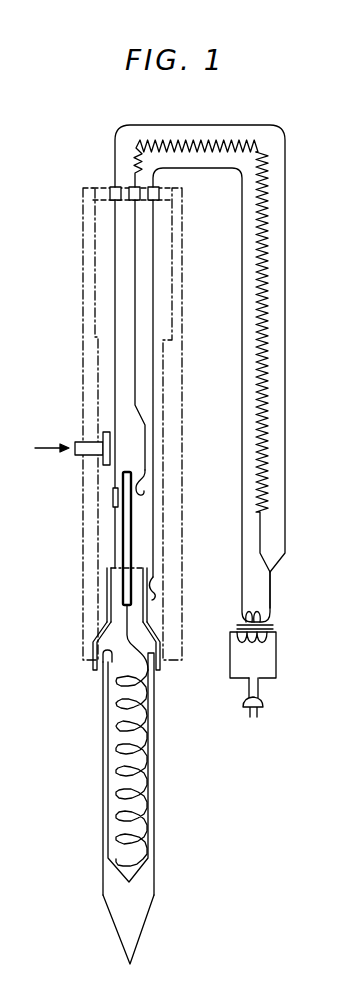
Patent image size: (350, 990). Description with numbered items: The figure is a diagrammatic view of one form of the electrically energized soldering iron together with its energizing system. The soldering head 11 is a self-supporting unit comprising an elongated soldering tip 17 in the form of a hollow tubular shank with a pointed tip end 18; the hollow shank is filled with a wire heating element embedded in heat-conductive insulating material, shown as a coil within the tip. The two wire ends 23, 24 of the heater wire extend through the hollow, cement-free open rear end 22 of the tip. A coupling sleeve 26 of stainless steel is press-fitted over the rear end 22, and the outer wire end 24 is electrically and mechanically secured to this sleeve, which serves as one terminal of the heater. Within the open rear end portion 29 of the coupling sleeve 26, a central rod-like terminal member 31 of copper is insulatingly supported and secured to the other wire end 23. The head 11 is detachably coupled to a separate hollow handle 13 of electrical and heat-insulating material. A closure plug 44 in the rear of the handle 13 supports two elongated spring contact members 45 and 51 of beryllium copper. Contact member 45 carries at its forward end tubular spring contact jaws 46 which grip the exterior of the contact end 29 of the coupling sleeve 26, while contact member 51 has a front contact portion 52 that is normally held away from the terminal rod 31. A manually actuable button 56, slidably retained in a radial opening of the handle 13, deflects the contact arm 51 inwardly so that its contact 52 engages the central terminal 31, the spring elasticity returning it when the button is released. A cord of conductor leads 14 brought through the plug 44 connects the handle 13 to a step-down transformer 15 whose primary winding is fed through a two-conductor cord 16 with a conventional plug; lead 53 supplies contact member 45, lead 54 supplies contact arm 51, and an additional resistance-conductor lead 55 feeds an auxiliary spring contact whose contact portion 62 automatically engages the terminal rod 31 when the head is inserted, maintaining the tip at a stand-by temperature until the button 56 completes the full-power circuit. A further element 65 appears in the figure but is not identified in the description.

The soldering head 11 is at (125, 807).
The handle 13 is at (77, 218).
The cord of conductor leads 14 is at (220, 411).
The step-down transformer 15 is at (278, 637).
The two-conductor cord 16 is at (264, 696).
The soldering tip 17 is at (108, 811).
The pointed tip end 18 is at (123, 912).
The open rear end of soldering tip 22 is at (104, 668).
The heater wire end 23 is at (131, 625).
The outer heater wire end 24 is at (120, 671).
The coupling sleeve 26 is at (92, 647).
The open rear end portion of coupling sleeve 29 is at (107, 597).
The central terminal rod 31 is at (122, 518).
The closure plug 44 is at (103, 187).
The contact member 45 is at (154, 304).
The contact jaws 46 is at (155, 578).
The contact arm 51 is at (114, 272).
The contact portion 52 is at (116, 497).
The conductor lead 53 is at (220, 161).
The supply lead 54 is at (222, 131).
The resistance-conductor lead 55 is at (269, 281).
The button member 56 is at (78, 453).
The auxiliary contact portion 62 is at (148, 478).
The conductor 65 is at (136, 265).